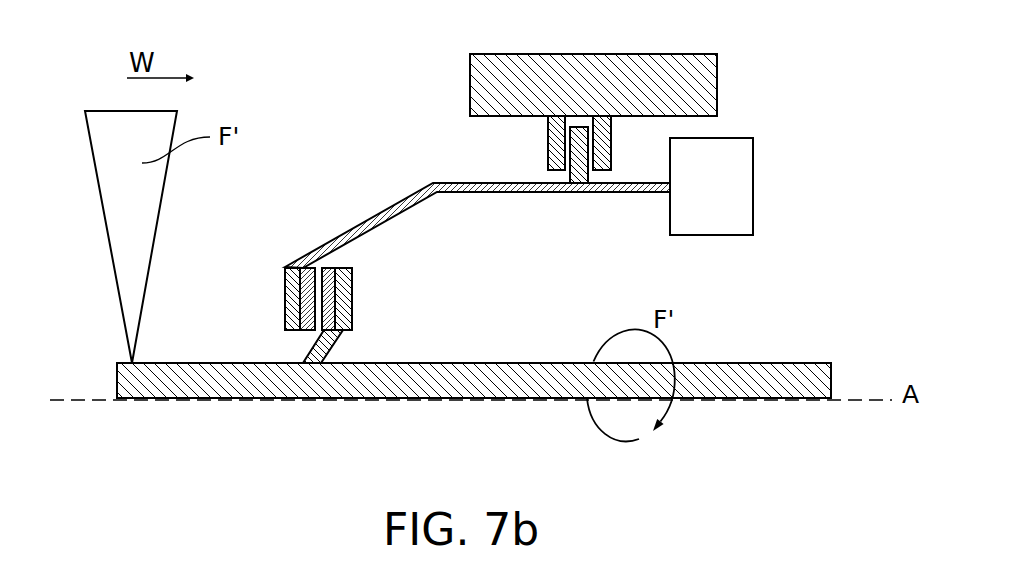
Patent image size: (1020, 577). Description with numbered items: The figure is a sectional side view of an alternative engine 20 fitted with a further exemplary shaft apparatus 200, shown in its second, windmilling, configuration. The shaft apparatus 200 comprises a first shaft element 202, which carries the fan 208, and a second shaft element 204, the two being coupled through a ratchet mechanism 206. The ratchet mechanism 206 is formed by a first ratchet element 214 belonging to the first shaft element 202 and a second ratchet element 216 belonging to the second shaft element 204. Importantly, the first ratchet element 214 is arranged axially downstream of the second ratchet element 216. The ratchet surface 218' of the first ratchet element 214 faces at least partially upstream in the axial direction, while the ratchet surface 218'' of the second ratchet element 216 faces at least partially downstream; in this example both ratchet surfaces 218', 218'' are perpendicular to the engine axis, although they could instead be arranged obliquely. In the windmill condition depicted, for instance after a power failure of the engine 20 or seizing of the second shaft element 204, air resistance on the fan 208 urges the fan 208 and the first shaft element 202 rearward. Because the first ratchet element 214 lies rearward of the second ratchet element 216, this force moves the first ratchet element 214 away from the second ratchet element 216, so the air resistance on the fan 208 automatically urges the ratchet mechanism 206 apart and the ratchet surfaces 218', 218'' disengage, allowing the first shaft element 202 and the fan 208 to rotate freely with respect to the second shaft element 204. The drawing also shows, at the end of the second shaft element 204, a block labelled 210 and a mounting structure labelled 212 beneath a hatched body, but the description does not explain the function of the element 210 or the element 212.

The engine 20 is at (277, 86).
The shaft apparatus 200 is at (286, 258).
The first shaft element 202 is at (137, 375).
The second shaft element 204 is at (367, 220).
The ratchet mechanism 206 is at (352, 325).
The fan 208 is at (115, 218).
The actuator 210 is at (753, 190).
The mount 212 is at (548, 138).
The first ratchet element 214 is at (352, 283).
The second ratchet element 216 is at (285, 283).
The ratchet surface 218' is at (387, 277).
The ratchet surface 218'' is at (247, 314).